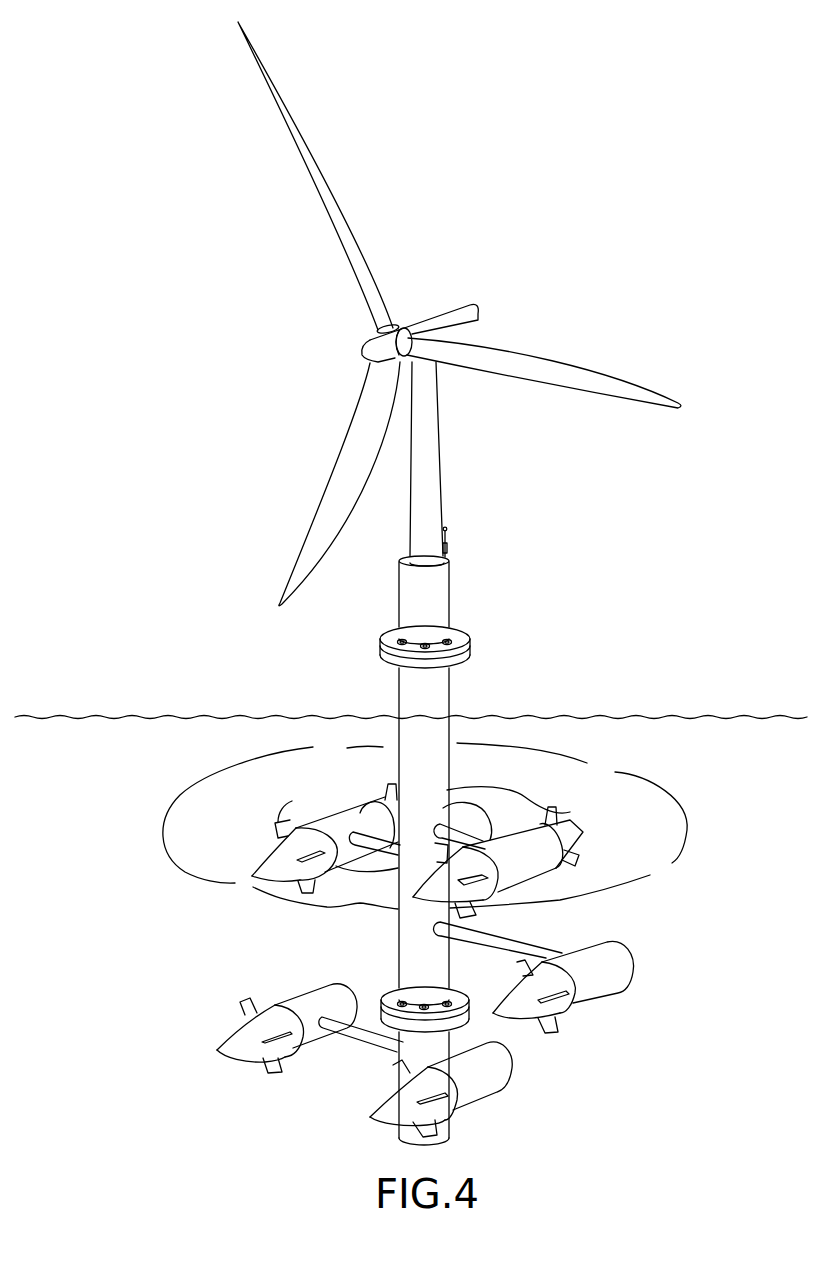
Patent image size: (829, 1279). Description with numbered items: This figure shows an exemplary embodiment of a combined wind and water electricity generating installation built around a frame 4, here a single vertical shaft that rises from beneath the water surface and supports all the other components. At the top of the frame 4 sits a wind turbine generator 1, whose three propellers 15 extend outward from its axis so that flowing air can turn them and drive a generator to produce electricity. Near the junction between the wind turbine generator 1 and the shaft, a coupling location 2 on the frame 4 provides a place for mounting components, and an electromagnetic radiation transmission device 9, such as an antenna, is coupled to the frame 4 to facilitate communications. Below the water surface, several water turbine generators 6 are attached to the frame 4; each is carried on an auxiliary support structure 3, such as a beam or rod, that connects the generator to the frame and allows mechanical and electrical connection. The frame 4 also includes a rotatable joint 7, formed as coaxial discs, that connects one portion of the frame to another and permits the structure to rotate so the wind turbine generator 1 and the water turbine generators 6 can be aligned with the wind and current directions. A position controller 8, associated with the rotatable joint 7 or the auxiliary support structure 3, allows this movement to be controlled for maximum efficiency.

The wind turbine generator 1 is at (468, 313).
The coupling location 2 is at (404, 559).
The auxiliary support structure 3 is at (538, 948).
The frame 4 is at (450, 598).
The water turbine generator 6 is at (625, 968).
The rotatable joint 7 is at (393, 988).
The position controller 8 is at (313, 1024).
The electromagnetic radiation transmission device 9 is at (444, 547).
The propellers 15 is at (335, 215).